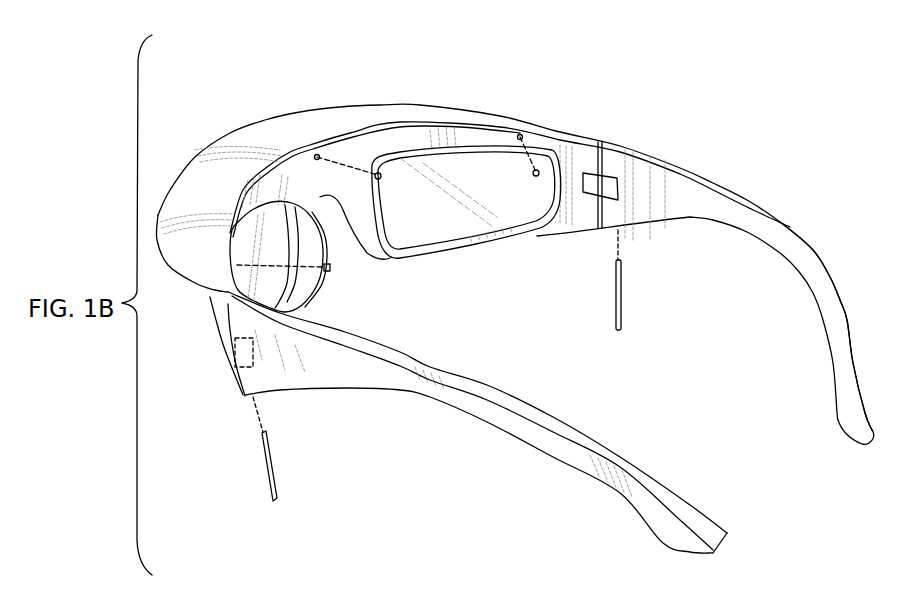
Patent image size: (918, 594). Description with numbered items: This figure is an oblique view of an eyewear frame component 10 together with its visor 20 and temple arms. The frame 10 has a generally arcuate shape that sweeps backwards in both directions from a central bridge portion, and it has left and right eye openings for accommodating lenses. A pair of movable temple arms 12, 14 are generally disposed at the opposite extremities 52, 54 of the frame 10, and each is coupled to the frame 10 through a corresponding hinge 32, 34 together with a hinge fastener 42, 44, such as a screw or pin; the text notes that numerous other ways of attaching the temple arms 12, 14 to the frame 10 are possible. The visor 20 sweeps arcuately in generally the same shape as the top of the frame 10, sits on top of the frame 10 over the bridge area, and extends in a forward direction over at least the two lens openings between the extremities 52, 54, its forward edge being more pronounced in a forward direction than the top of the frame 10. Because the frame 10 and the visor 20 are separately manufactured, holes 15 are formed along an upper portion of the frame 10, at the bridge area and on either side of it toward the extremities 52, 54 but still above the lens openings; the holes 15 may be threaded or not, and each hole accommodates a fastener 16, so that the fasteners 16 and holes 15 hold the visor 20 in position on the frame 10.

The eyewear frame component 10 is at (536, 240).
The temple arm 12 is at (405, 388).
The temple arm 14 is at (703, 175).
The holes 15 is at (317, 157).
The fastener 16 is at (534, 178).
The visor 20 is at (387, 117).
The hinge 32 is at (232, 355).
The hinge 34 is at (619, 186).
The hinge fastener 42 is at (270, 467).
The hinge fastener 44 is at (622, 300).
The extremity 52 is at (213, 309).
The extremity 54 is at (606, 140).